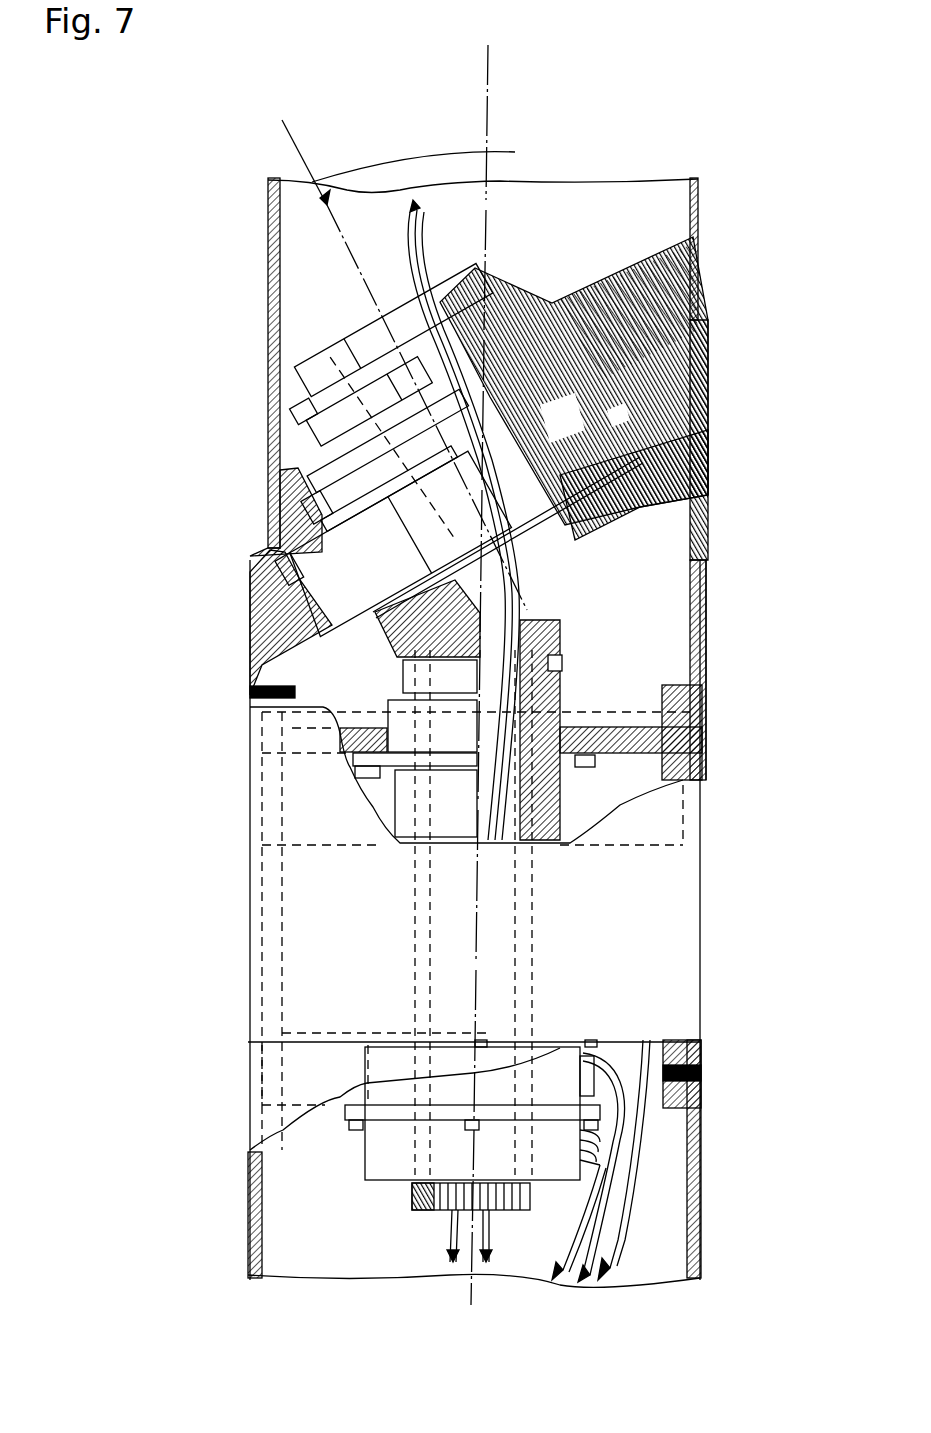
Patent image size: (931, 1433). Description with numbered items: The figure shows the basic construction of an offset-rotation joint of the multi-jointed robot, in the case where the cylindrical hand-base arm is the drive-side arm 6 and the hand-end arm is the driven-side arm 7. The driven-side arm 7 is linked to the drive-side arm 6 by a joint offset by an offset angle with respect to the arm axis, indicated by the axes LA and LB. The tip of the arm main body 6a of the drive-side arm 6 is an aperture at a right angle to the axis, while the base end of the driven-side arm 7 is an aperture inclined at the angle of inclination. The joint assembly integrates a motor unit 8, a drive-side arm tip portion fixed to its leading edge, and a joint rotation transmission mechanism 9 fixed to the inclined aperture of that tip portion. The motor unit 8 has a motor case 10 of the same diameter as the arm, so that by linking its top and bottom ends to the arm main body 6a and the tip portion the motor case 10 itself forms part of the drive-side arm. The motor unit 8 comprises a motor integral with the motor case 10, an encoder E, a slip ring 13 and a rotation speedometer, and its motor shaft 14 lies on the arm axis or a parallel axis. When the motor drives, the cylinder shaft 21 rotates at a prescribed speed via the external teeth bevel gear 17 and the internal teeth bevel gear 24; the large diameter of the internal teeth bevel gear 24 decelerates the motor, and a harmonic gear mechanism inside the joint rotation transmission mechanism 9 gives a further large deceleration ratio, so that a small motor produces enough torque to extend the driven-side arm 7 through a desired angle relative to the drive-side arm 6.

The optical axis of lens / reference axis LA is at (488, 92).
The optical axis of tilted lens unit LB is at (283, 147).
The driven-side arm 7 is at (270, 300).
The joint rotation transmission mechanism 9 is at (300, 480).
The cylinder shaft 21 is at (708, 437).
The external teeth bevel gear 17 is at (640, 525).
The internal teeth bevel gear 24 is at (556, 630).
The motor shaft 14 is at (558, 690).
The motor unit 8 is at (248, 986).
The motor case 10 is at (674, 958).
The encoder E is at (565, 1085).
The slip ring 13 is at (592, 1160).
The drive-side arm 6 is at (248, 1228).
The arm main body 6a is at (701, 1233).